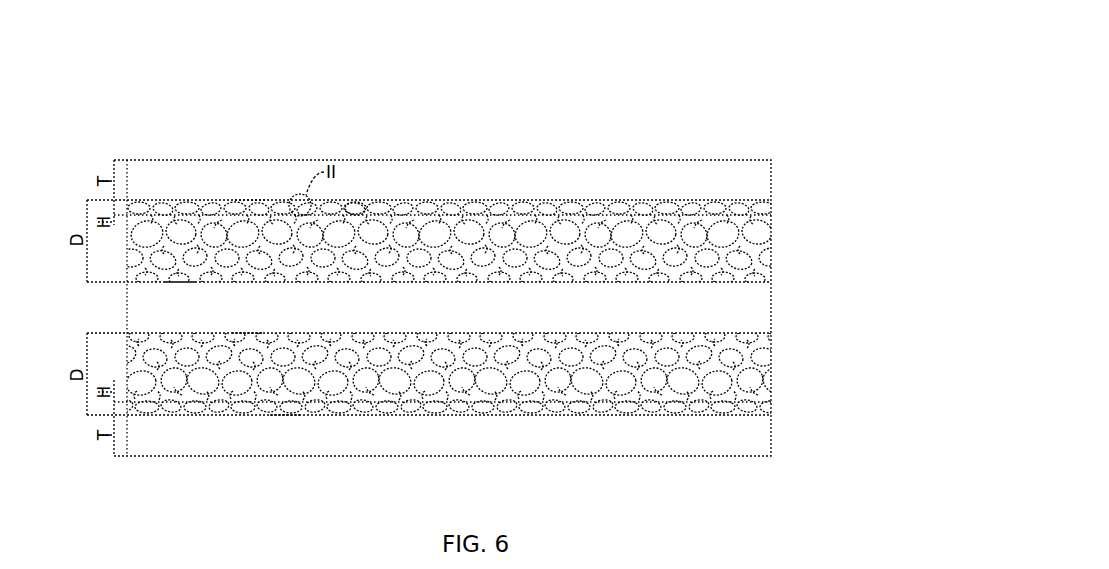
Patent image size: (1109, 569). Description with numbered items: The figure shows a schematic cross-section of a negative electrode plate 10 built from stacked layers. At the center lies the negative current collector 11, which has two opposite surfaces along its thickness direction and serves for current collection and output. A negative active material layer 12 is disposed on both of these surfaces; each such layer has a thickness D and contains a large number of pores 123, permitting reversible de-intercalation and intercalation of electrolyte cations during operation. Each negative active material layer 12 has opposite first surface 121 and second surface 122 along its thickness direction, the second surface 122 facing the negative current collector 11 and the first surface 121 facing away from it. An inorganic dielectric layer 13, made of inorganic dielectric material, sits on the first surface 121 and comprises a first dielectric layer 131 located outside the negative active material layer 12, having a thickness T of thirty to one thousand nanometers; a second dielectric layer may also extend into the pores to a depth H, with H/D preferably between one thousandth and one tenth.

The negative electrode plate 10 is at (456, 33).
The negative current collector 11 is at (771, 310).
The negative active material layer 12 is at (771, 245).
The inorganic dielectric layer 13 is at (118, 147).
The first surface 121 is at (250, 200).
The second surface 122 is at (177, 283).
The pores 123 is at (355, 202).
The first dielectric layer 131 is at (771, 175).